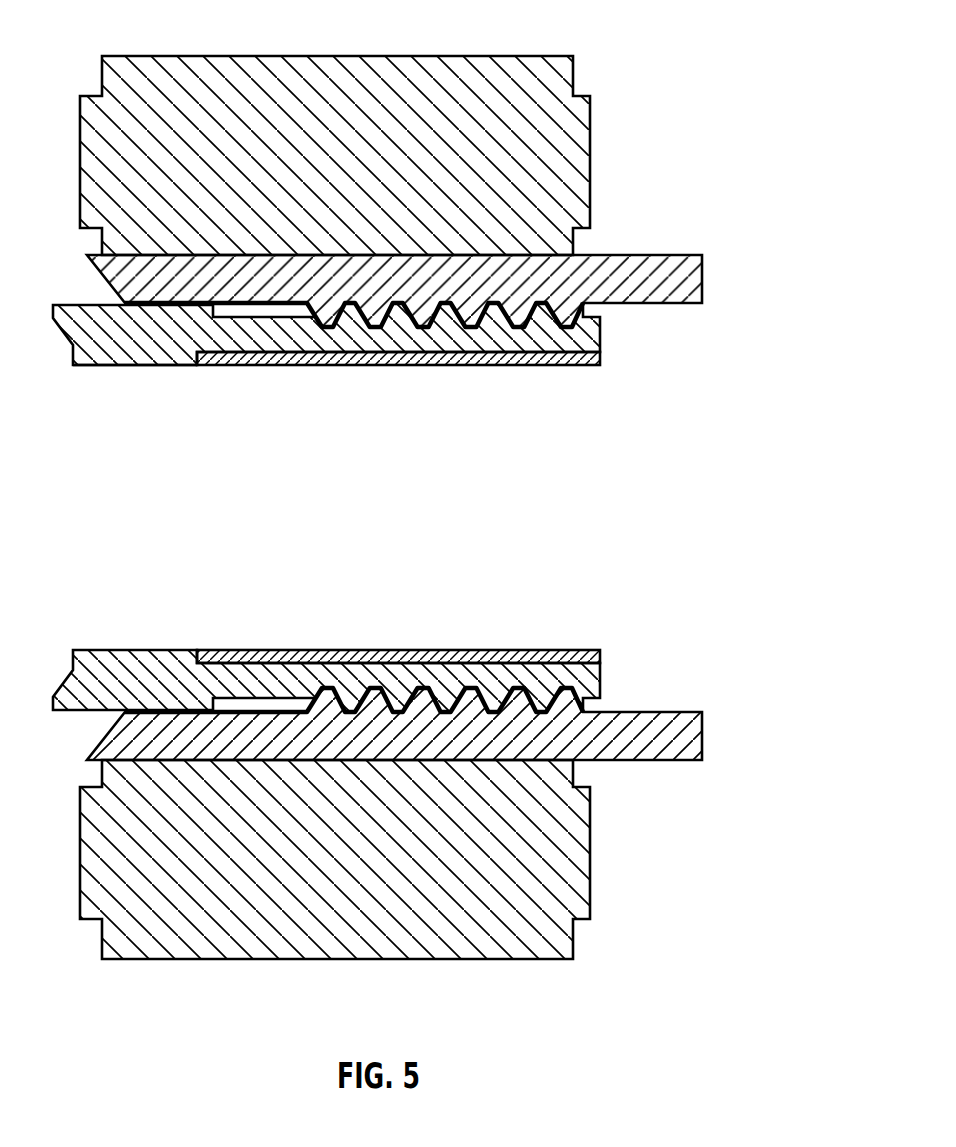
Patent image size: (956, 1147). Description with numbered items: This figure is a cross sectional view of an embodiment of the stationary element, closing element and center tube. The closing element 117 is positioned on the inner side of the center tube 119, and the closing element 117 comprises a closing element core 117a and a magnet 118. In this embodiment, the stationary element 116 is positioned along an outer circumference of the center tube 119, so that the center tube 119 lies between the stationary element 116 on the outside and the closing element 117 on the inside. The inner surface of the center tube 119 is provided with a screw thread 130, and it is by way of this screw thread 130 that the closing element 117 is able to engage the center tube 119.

The stationary element 116 is at (532, 66).
The closing element 117 is at (107, 364).
The closing element core 117a is at (158, 356).
The magnet 118 is at (570, 358).
The center tube 119 is at (633, 255).
The screw thread 130 is at (557, 330).